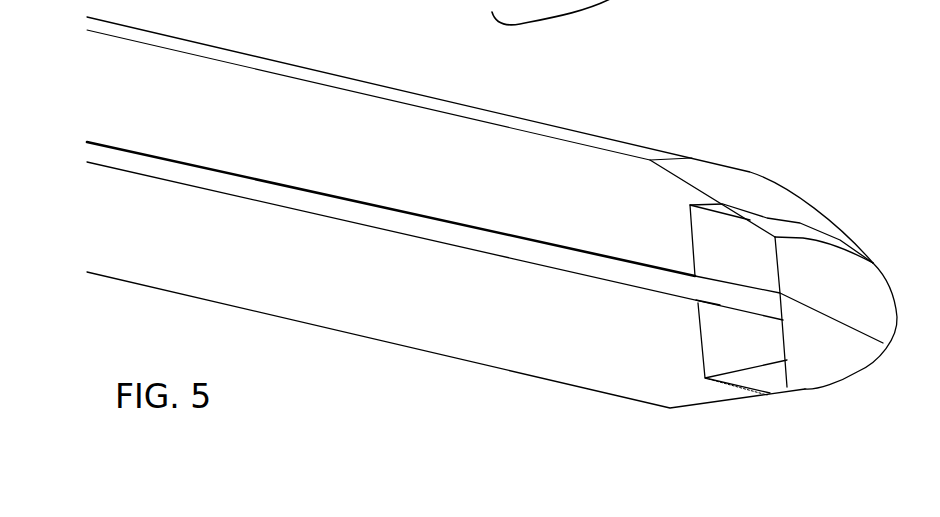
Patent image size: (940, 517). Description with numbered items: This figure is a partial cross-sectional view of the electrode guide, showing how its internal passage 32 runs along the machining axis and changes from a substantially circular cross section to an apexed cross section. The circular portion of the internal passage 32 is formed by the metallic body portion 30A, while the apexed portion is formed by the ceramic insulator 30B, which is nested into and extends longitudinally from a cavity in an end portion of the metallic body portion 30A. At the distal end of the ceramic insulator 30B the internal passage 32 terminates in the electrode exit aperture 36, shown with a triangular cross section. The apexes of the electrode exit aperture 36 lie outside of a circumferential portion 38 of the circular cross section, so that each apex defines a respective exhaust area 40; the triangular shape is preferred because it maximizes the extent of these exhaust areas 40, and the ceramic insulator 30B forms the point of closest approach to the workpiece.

The metallic body portion 30A is at (308, 68).
The ceramic insulator 30B is at (767, 229).
The internal passage 32 is at (538, 246).
The electrode exit aperture 36 is at (786, 313).
The circumferential portion 38 is at (715, 300).
The exhaust areas 40 is at (714, 300).